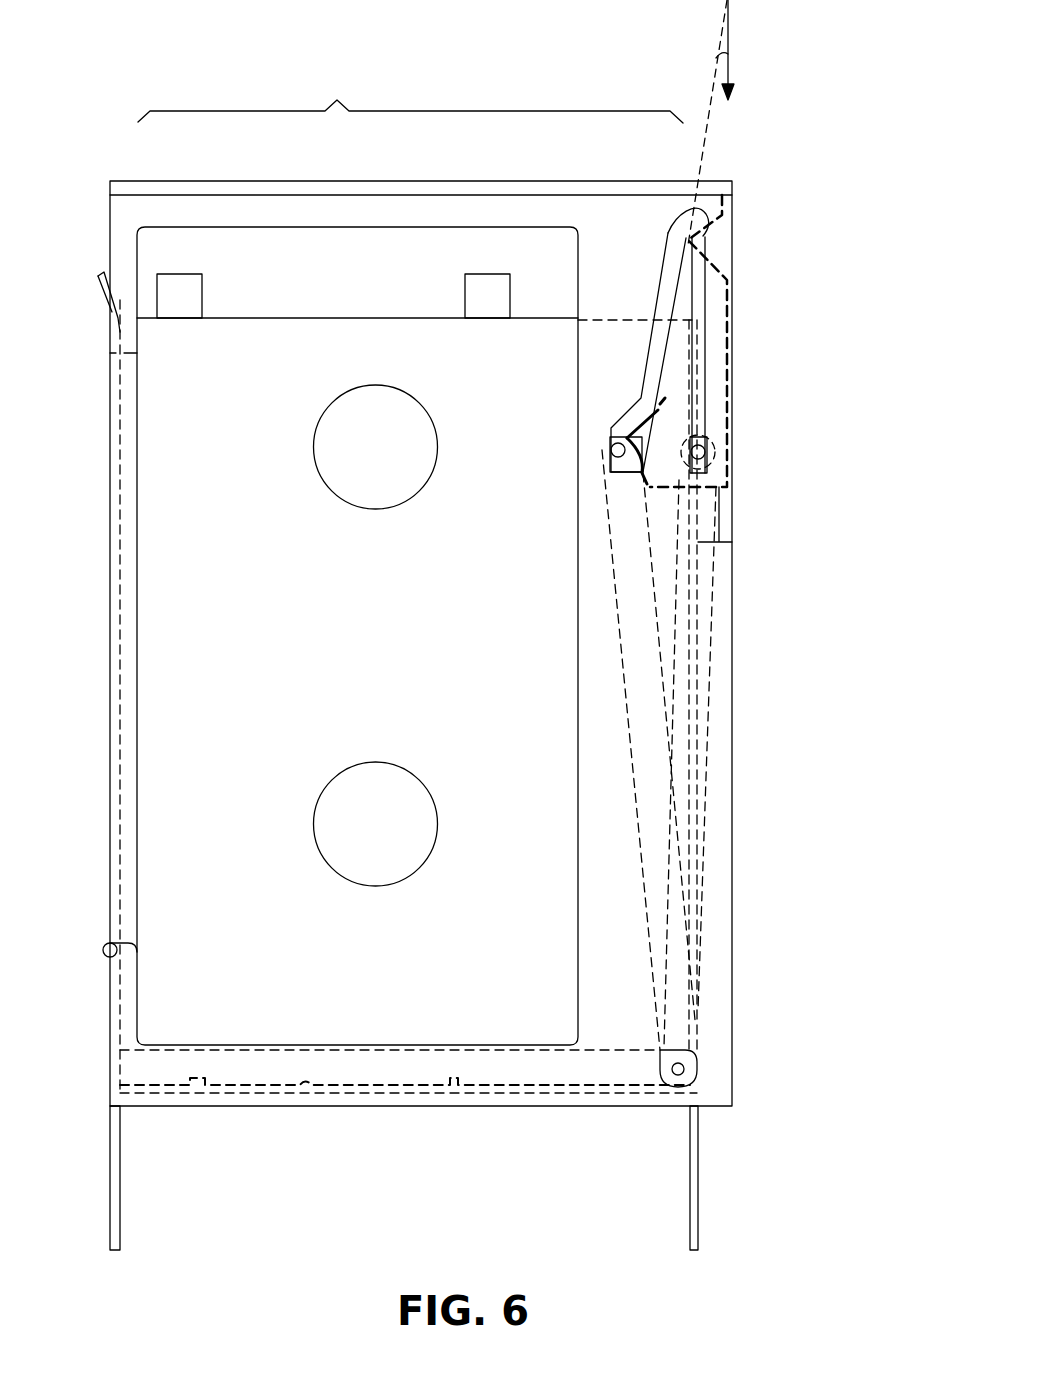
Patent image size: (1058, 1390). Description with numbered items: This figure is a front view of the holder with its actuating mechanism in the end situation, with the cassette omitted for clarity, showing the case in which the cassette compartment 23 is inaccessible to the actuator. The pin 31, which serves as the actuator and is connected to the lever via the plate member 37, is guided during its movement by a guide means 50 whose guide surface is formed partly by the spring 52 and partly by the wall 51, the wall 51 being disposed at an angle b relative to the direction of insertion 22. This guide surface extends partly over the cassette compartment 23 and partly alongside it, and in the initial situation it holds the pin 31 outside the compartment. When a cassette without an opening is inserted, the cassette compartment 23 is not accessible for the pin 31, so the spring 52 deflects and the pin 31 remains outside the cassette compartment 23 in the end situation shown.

The direction of insertion 22 is at (675, 70).
The cassette compartment 23 is at (421, 657).
The pin 31 is at (616, 450).
The plate member 37 is at (628, 755).
The guide means 50 is at (736, 216).
The wall 51 is at (663, 352).
The spring 52 is at (712, 264).